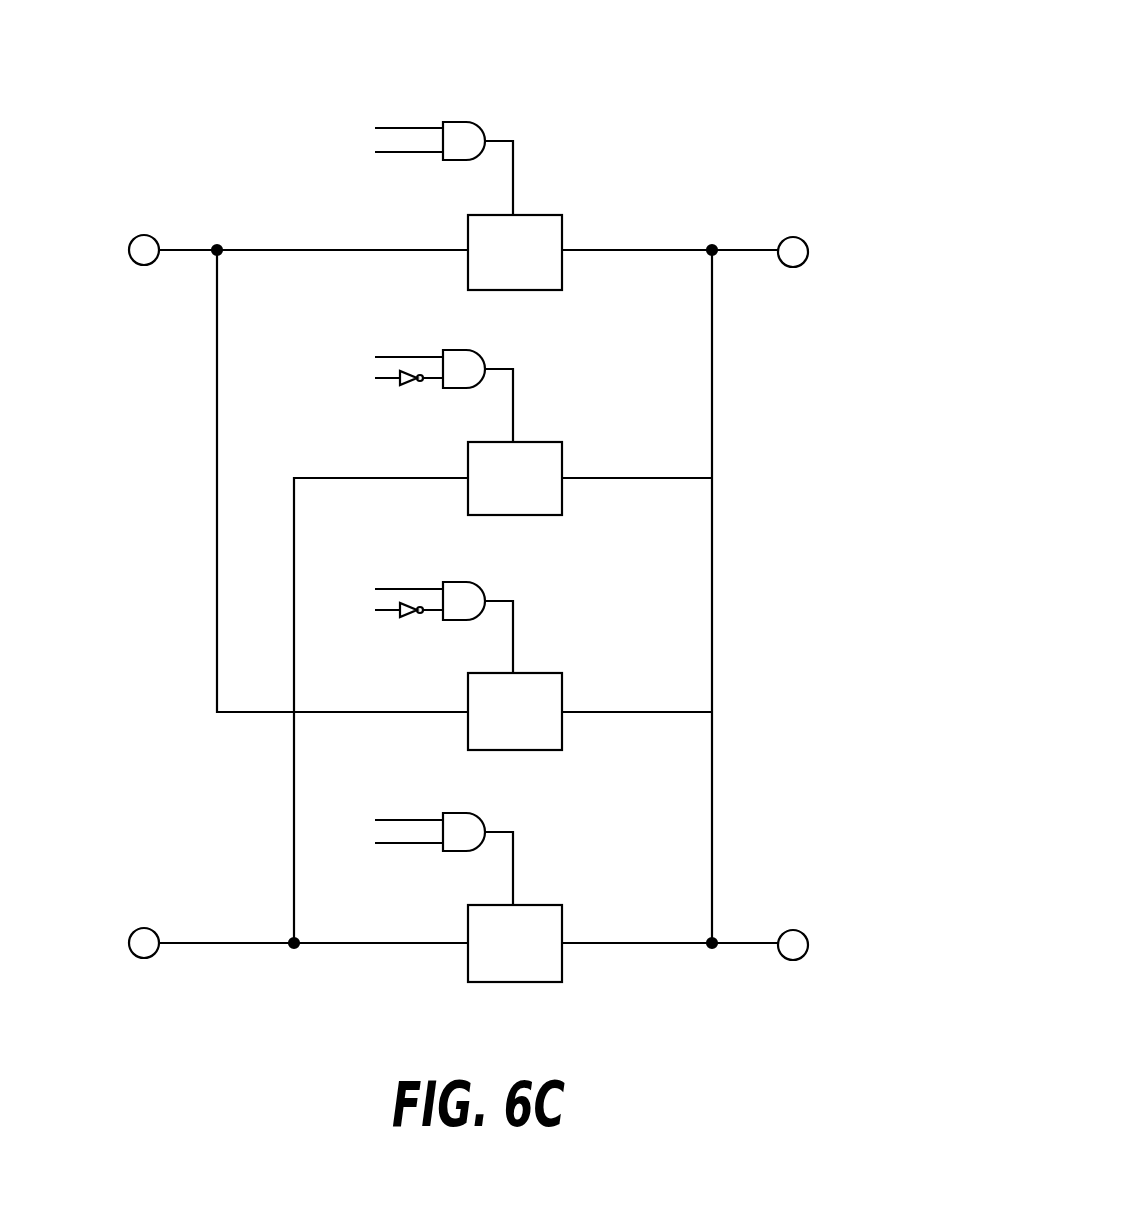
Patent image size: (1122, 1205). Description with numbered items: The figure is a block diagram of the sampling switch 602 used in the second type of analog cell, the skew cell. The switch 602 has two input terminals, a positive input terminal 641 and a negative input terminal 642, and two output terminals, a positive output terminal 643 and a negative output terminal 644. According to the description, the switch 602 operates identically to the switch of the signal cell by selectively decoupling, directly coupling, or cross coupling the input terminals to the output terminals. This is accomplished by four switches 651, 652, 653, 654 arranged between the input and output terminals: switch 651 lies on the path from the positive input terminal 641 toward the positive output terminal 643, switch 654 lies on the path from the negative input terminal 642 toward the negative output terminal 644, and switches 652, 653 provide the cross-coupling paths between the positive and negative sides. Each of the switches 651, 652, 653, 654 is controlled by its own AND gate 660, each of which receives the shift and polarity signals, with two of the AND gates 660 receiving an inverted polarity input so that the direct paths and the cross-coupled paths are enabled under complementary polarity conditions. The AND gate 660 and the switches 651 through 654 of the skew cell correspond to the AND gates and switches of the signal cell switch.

The switch 602 is at (669, 78).
The P input terminal (Pin) 641 is at (145, 235).
The N input terminal (Nin) 642 is at (145, 958).
The P output terminal (Pout) 643 is at (793, 237).
The N output terminal (Nout) 644 is at (793, 930).
The switch 651 is at (541, 265).
The switch 652 is at (541, 492).
The switch 653 is at (541, 725).
The switch 654 is at (541, 958).
The AND gate 660 is at (468, 122).